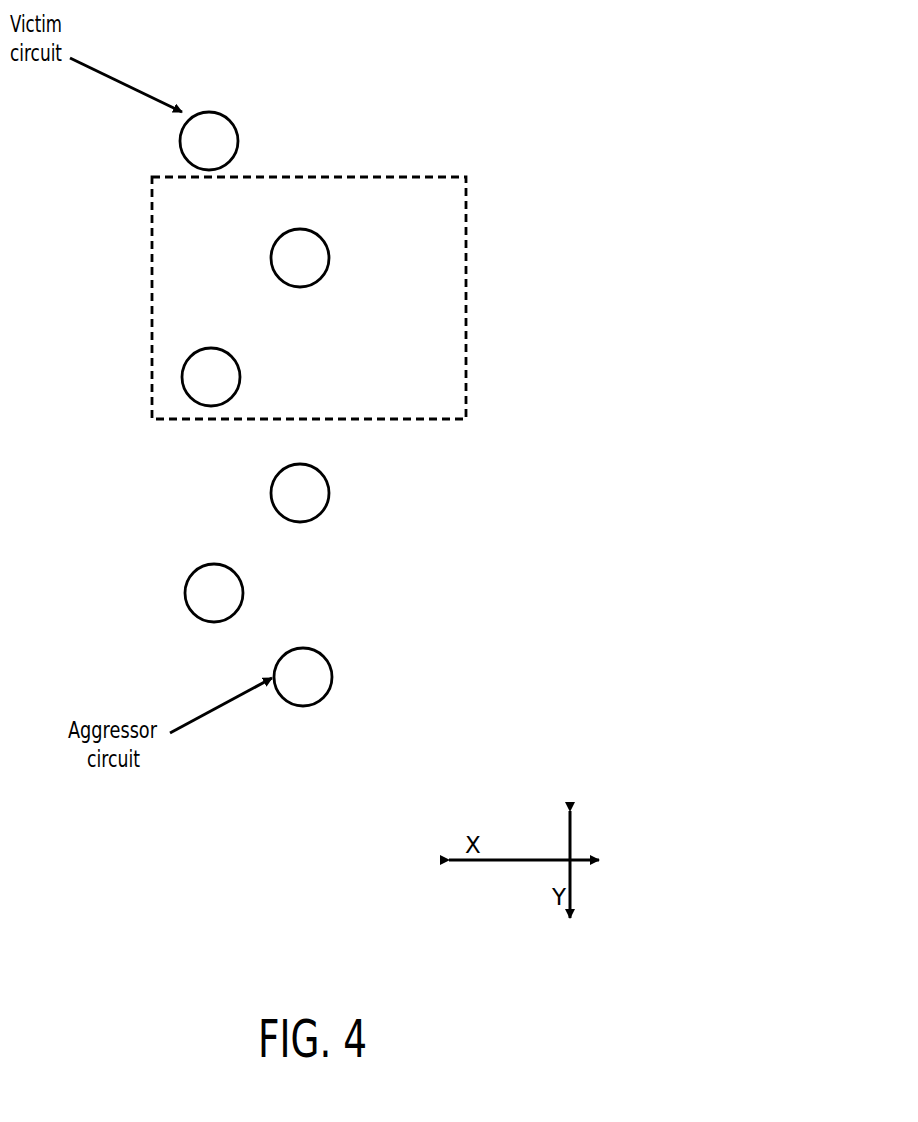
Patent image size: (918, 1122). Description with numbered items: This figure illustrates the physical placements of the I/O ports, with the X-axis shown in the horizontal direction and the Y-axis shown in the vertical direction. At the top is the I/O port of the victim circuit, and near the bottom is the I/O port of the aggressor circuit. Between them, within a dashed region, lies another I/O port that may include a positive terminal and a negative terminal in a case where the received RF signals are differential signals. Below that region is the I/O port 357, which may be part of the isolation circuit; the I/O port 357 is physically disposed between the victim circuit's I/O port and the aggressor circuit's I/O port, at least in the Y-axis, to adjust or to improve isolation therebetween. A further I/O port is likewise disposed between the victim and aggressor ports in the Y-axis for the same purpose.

The I/O port 357 is at (302, 464).